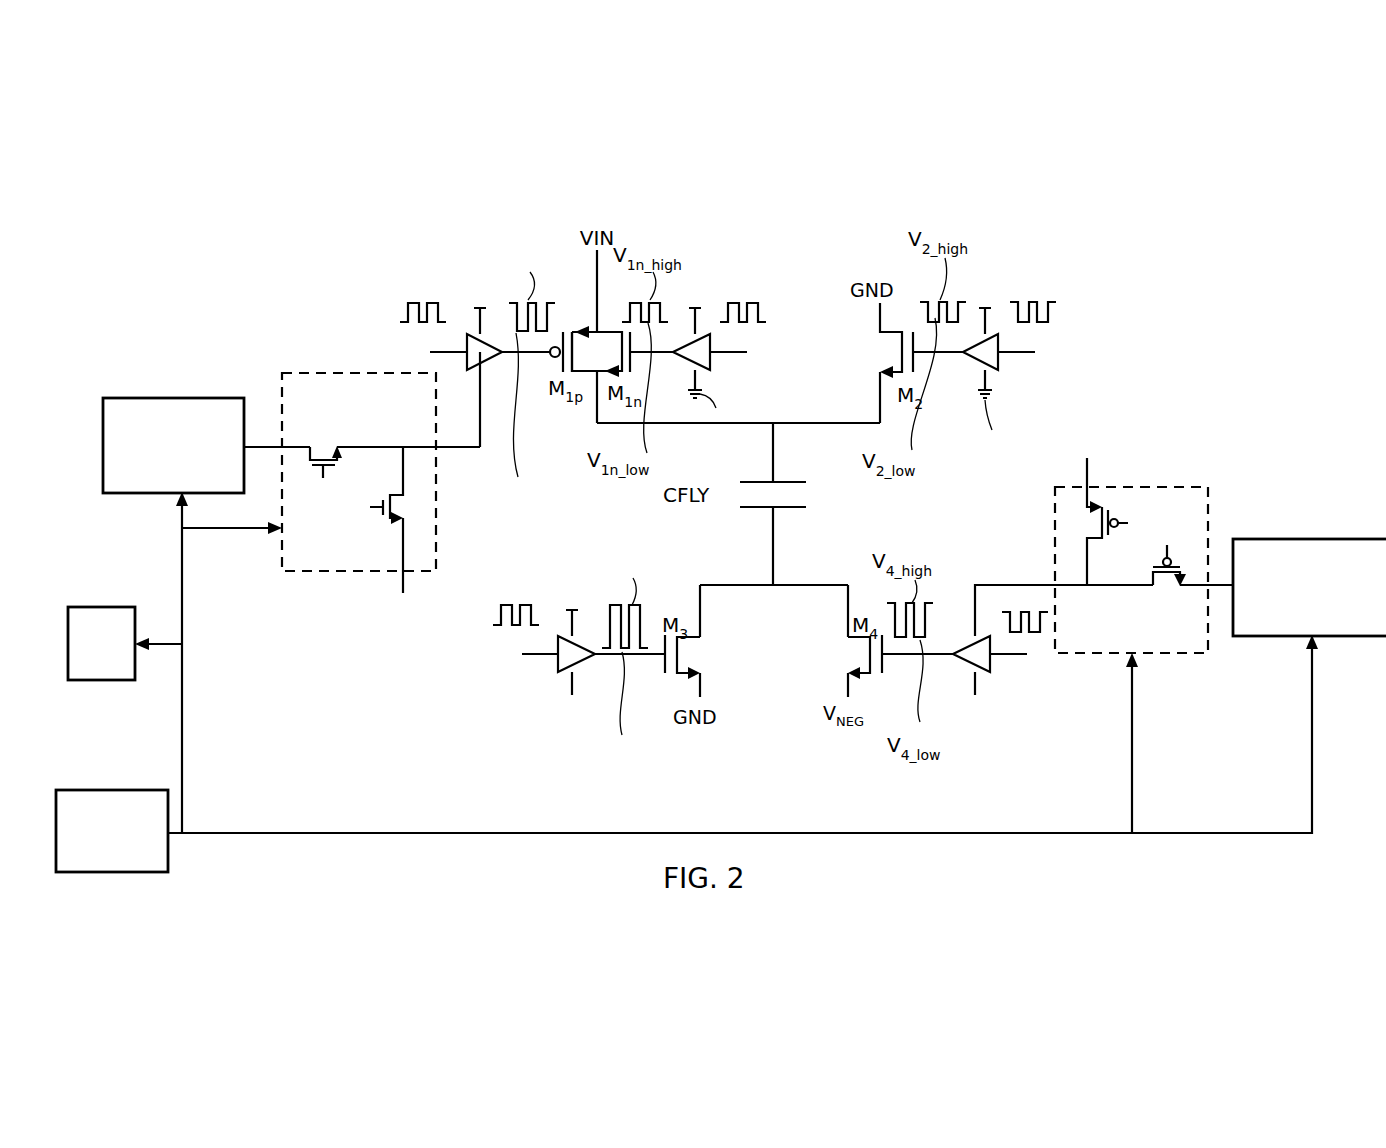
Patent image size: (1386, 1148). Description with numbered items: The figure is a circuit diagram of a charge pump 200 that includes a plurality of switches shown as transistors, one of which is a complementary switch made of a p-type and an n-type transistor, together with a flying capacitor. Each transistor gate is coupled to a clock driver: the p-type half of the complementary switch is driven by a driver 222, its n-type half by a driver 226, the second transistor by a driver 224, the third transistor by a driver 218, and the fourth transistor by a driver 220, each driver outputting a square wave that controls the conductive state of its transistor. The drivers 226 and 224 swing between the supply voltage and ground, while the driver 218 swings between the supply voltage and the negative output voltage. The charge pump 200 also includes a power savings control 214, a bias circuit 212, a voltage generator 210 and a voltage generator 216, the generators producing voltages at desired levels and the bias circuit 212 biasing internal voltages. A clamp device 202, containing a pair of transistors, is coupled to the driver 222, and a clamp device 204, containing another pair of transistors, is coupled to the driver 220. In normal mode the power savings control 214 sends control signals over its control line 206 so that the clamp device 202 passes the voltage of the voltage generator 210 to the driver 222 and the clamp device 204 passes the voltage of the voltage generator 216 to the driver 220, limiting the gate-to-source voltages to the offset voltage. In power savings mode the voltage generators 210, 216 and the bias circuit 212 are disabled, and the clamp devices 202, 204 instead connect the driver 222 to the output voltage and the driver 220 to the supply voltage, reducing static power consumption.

The charge pump 200 is at (1185, 328).
The clamp device 202 is at (342, 571).
The clamp device 204 is at (1160, 487).
The power saving control signal line 206 is at (182, 700).
The voltage generator 210 is at (173, 398).
The bias circuit 212 is at (90, 607).
The power savings control 214 is at (98, 790).
The voltage generator 216 is at (1320, 539).
The driver 218 is at (560, 670).
The driver 220 is at (990, 670).
The driver 222 is at (497, 366).
The driver 224 is at (1000, 366).
The driver 226 is at (712, 366).